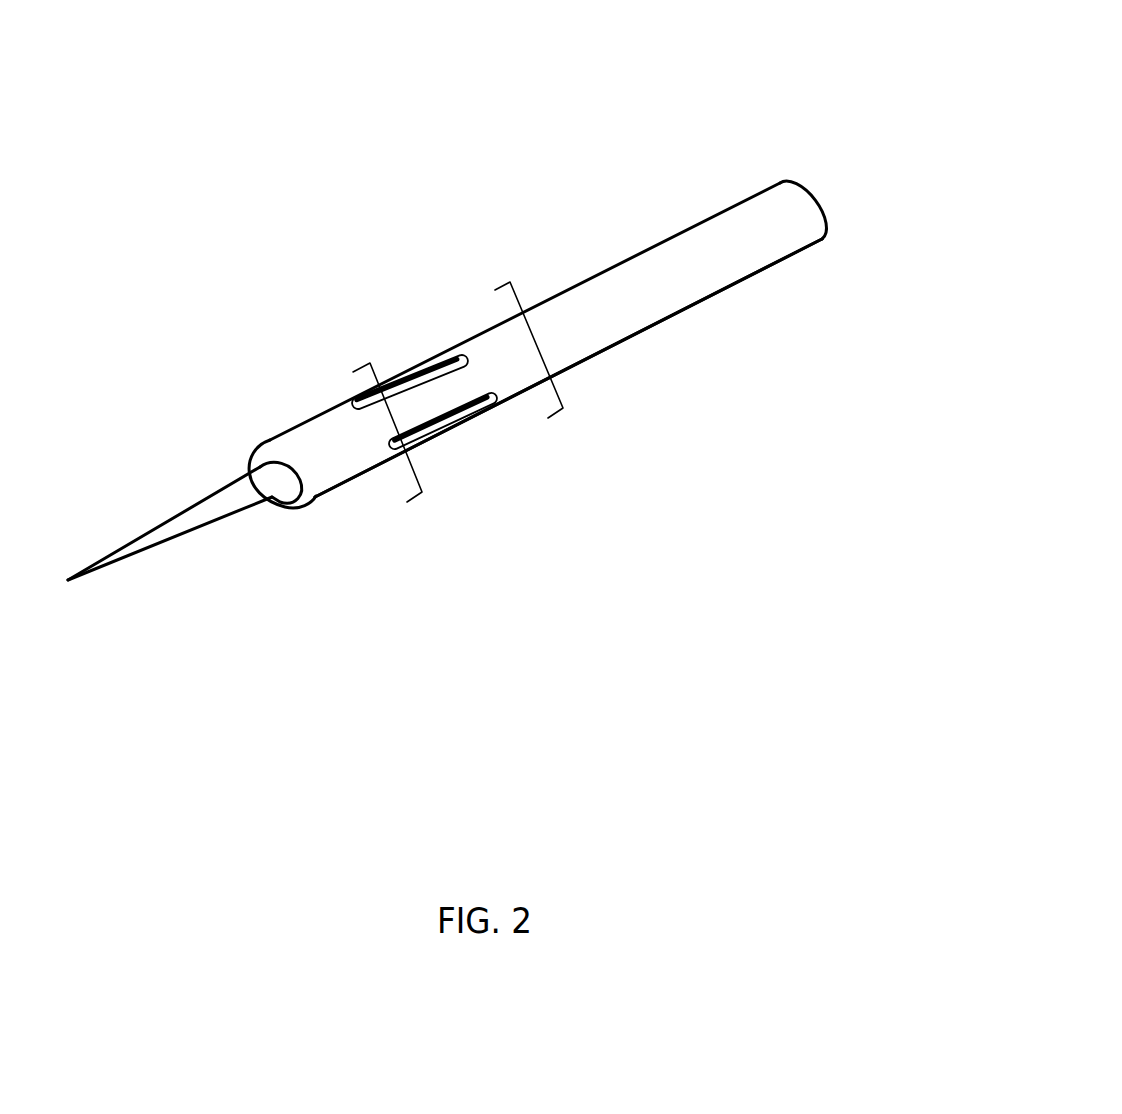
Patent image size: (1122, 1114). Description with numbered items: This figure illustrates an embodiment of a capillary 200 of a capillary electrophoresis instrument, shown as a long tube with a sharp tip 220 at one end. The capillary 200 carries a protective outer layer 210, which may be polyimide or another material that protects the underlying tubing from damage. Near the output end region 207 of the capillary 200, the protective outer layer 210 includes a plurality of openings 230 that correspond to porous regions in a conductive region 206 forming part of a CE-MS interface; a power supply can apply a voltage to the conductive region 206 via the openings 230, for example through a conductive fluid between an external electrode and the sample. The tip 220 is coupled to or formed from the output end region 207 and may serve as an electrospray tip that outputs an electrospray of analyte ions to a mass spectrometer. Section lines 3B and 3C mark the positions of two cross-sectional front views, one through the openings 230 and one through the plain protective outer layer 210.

The capillary 200 is at (858, 52).
The protective outer layer 210 is at (628, 303).
The tip 220 is at (157, 522).
The openings 230 is at (405, 390).
The conductive region 206 is at (487, 410).
The output end region 207 is at (340, 482).
The cross-sectional front view 3B is at (381, 433).
The cross-sectional front view 3C is at (536, 351).